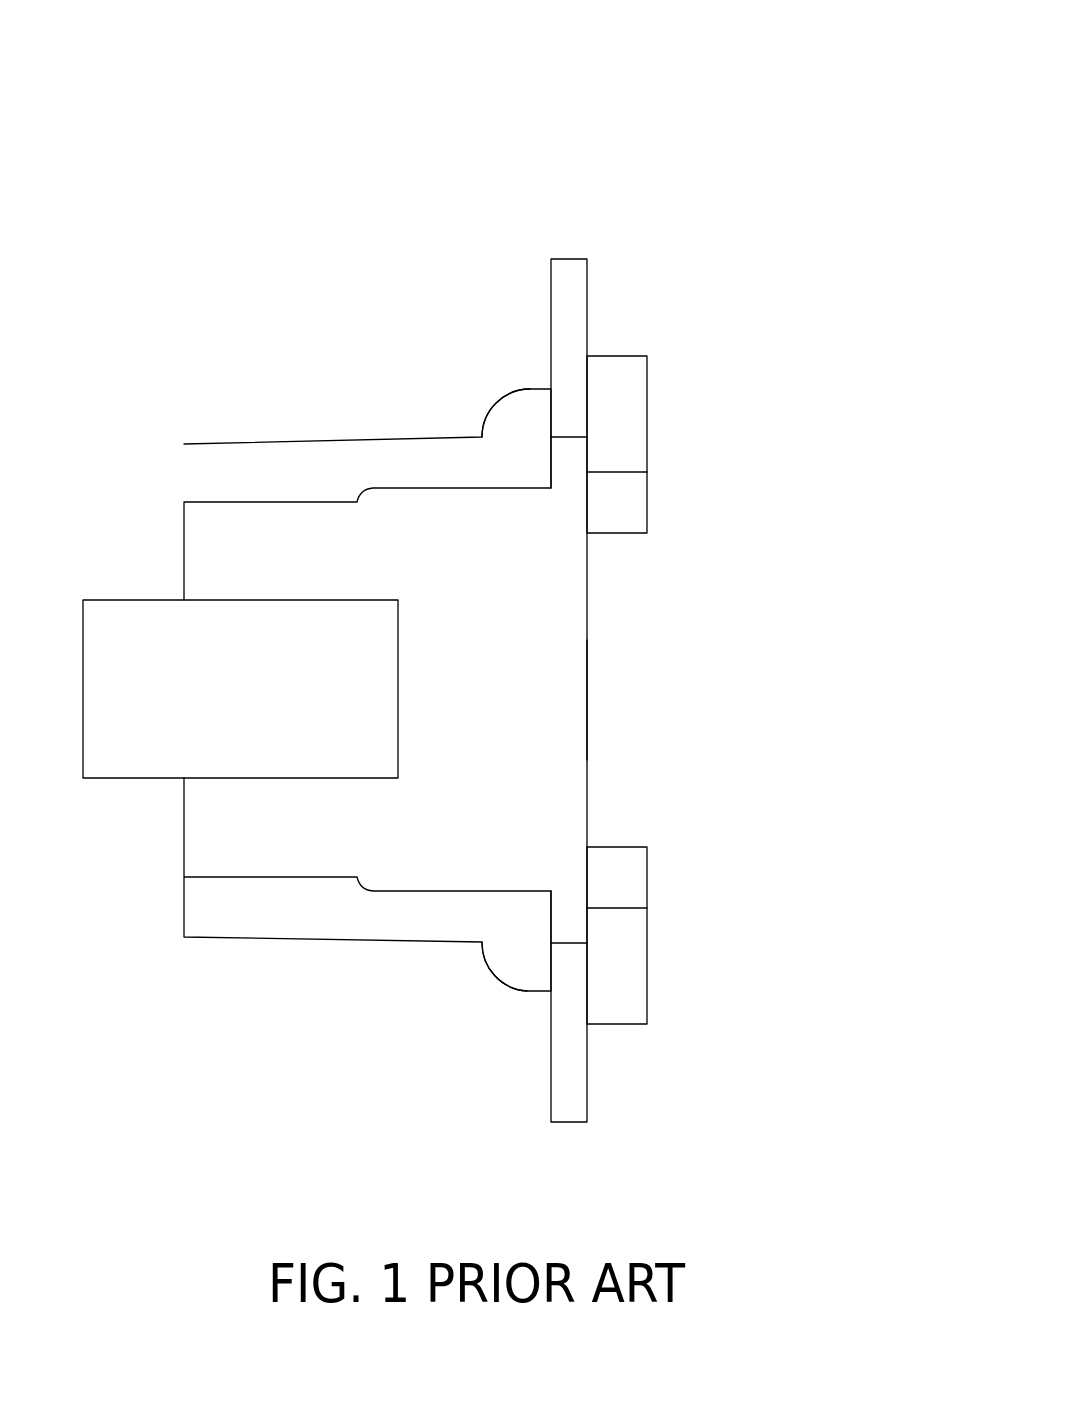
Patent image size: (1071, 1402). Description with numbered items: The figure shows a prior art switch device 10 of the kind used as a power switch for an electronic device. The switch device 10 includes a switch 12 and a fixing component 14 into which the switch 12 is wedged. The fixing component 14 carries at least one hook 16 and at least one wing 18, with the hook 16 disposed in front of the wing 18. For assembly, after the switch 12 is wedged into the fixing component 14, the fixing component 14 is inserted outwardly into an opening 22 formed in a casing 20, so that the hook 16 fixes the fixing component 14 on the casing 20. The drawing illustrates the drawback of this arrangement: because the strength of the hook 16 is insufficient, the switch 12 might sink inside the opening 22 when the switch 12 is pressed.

The switch device 10 is at (793, 95).
The switch 12 is at (83, 678).
The fixing component 14 is at (322, 440).
The hook 16 is at (525, 420).
The wing 18 is at (628, 408).
The casing 20 is at (573, 272).
The opening 22 is at (603, 702).